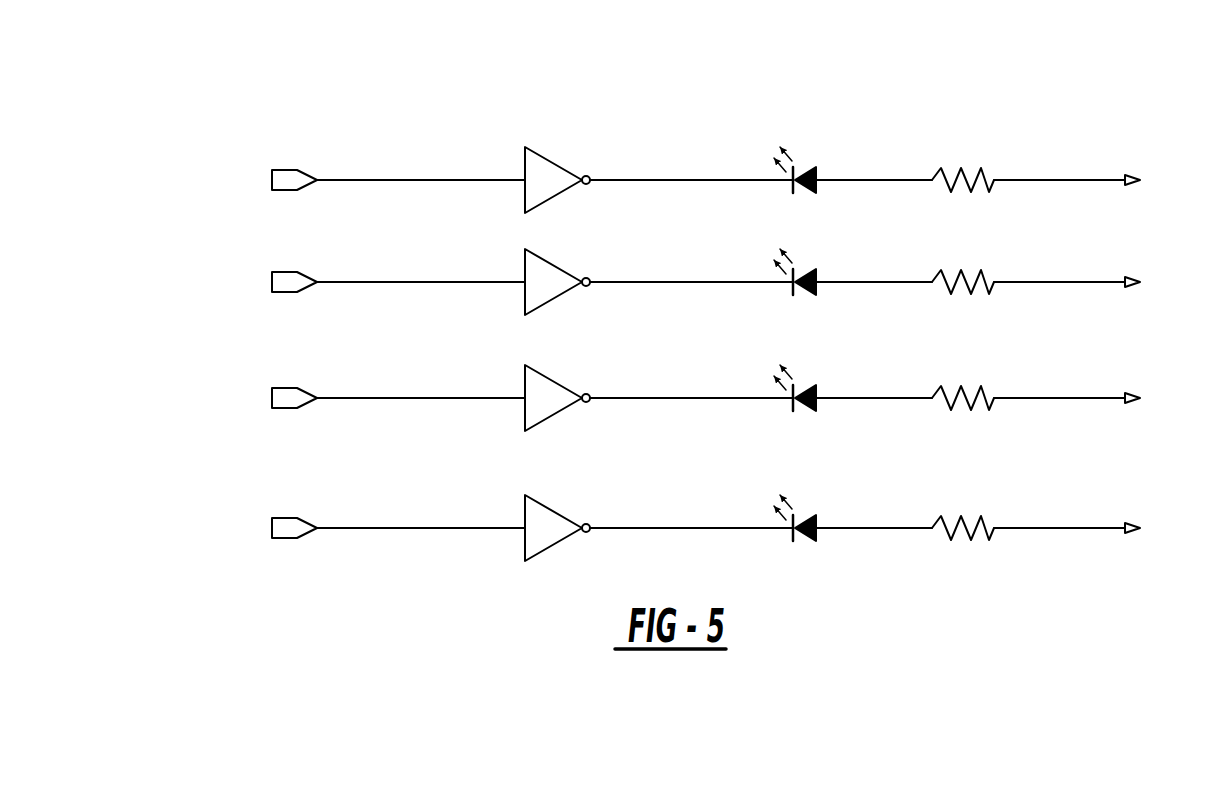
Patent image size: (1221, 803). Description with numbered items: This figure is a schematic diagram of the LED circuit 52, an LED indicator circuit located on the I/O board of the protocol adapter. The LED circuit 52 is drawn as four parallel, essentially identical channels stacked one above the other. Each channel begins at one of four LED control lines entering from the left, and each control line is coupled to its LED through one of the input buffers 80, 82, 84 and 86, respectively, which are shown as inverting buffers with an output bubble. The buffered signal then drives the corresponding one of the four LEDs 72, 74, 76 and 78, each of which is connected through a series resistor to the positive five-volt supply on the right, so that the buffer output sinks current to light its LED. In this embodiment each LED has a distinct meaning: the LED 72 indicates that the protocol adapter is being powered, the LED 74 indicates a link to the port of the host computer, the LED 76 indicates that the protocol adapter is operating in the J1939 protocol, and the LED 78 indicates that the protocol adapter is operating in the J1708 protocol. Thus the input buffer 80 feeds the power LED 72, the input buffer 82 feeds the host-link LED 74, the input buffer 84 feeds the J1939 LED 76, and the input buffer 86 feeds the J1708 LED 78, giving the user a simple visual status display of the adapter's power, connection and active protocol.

The LED circuit 52 is at (778, 73).
The LED 72 is at (816, 171).
The LED 74 is at (816, 273).
The LED 76 is at (816, 389).
The LED 78 is at (816, 519).
The input buffer 80 is at (553, 162).
The input buffer 82 is at (553, 264).
The input buffer 84 is at (553, 380).
The input buffer 86 is at (553, 510).